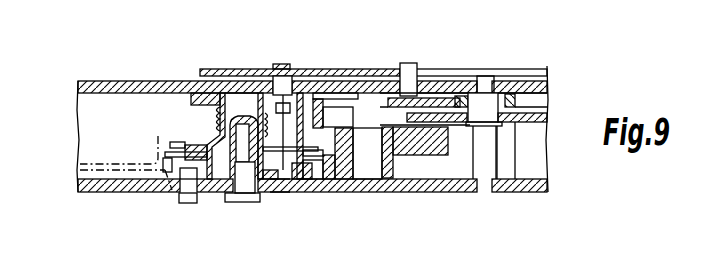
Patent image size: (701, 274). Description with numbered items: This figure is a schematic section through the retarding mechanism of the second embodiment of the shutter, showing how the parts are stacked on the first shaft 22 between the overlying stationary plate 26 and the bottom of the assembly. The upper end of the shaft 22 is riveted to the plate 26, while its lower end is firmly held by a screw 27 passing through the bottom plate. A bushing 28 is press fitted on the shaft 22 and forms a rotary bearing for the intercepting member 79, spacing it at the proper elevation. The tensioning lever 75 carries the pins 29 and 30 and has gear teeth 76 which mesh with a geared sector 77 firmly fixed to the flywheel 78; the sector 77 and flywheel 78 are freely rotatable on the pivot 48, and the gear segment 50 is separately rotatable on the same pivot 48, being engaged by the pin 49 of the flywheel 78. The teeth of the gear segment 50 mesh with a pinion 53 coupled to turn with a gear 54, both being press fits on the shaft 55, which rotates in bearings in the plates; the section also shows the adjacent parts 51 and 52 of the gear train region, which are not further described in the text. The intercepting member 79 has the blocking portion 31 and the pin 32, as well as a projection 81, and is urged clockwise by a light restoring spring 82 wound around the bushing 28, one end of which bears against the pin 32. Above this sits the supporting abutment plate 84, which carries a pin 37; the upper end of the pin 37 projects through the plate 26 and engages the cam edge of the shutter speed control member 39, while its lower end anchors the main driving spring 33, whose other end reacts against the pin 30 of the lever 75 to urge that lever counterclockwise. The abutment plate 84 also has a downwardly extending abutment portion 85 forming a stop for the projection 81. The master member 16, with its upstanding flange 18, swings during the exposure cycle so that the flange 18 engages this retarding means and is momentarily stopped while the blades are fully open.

The master member 16 is at (128, 162).
The upstanding flange 18 is at (157, 138).
The first shaft 22 is at (244, 89).
The stationary plate 26 is at (135, 86).
The screw 27 is at (252, 202).
The bushing 28 is at (203, 163).
The pin 29 is at (182, 203).
The pin 30 is at (305, 177).
The intercepting portion 31 is at (165, 173).
The pin 32 is at (178, 142).
The main driving spring 33 is at (312, 125).
The pin 37 is at (285, 66).
The shutter speed control member 39 is at (229, 72).
The pivot 48 is at (373, 187).
The pin 49 is at (333, 95).
The gear segment 50 is at (437, 99).
The pin 51 is at (406, 64).
The rail 52 is at (459, 71).
The pinion 53 is at (504, 99).
The gear 54 is at (527, 125).
The shaft 55 is at (486, 83).
The tensioning lever 75 is at (280, 193).
The gear teeth 76 is at (327, 183).
The geared sector 77 is at (338, 185).
The flywheel 78 is at (425, 146).
The intercepting member 79 is at (197, 140).
The projection 81 is at (313, 175).
The restoring spring 82 is at (200, 152).
The supporting abutment plate 84 is at (196, 93).
The abutment portion 85 is at (297, 170).